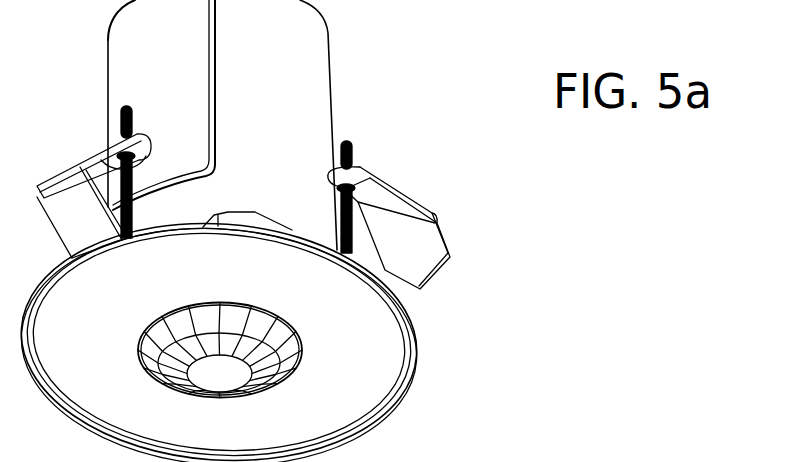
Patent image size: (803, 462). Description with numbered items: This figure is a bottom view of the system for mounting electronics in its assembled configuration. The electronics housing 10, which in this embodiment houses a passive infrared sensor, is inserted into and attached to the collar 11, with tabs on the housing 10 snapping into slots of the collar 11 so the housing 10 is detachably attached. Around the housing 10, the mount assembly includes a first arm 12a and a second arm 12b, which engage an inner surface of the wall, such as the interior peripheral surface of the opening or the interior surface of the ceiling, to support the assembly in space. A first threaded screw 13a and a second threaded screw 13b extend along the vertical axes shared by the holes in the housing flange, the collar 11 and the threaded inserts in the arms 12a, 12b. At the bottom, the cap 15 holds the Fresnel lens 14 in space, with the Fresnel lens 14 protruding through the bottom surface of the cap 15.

The electronics housing 10 is at (327, 63).
The collar 11 is at (257, 223).
The first arm 12a is at (429, 210).
The second arm 12b is at (96, 152).
The first threaded screw 13a is at (351, 151).
The second threaded screw 13b is at (132, 112).
The Fresnel lens 14 is at (268, 318).
The cap 15 is at (414, 340).